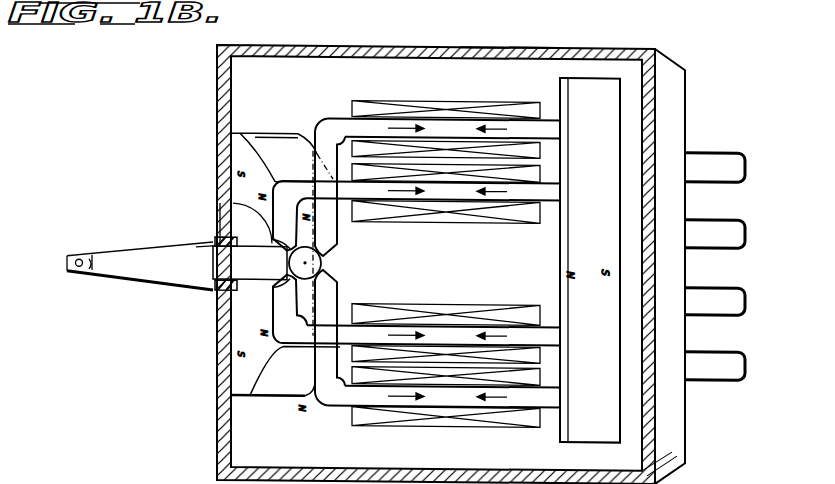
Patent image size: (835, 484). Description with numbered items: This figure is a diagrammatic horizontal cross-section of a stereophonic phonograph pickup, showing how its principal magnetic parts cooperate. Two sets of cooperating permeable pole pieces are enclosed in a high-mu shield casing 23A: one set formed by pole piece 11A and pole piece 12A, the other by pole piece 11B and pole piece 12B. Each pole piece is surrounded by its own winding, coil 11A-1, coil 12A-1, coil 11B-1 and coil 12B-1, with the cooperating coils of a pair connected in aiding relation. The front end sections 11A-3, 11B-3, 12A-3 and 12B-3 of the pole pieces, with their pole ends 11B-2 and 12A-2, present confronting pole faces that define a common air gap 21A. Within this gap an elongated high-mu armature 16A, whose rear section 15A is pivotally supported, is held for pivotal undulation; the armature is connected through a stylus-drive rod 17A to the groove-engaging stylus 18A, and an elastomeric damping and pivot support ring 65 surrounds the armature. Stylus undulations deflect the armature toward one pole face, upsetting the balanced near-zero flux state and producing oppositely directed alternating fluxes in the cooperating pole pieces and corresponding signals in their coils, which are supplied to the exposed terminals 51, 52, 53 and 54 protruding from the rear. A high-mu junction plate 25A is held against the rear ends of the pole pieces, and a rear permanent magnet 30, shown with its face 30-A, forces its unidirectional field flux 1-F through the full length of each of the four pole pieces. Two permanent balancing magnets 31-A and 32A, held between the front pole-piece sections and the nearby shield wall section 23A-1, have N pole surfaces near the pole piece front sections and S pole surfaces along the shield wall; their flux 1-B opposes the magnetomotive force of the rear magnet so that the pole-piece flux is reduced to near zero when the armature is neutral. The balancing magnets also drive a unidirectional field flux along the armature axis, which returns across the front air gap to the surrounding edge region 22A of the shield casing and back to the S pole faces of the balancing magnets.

The pole piece 11A is at (550, 129).
The pole piece 11B is at (550, 193).
The pole piece 12A is at (550, 340).
The pole piece 12B is at (550, 402).
The coil 11A-1 is at (485, 95).
The coil 11B-1 is at (447, 222).
The coil 12A-1 is at (455, 304).
The coil 12B-1 is at (462, 426).
The pole piece front end section 11A-3 is at (328, 226).
The pole piece front end section 11B-3 is at (281, 205).
The pole piece front end section 12A-3 is at (288, 335).
The pole piece front end section 12B-3 is at (332, 300).
The pole piece end 11B-2 is at (263, 253).
The pole piece end 12A-2 is at (262, 278).
The flux 1-B is at (368, 432).
The field flux 1-F is at (545, 445).
The armature rear section 15A is at (278, 240).
The armature 16A is at (215, 266).
The stylus-drive rod 17A is at (125, 282).
The stylus 18A is at (73, 273).
The air gap 21A is at (225, 243).
The shield casing edge region 22A is at (218, 292).
The shield casing 23A is at (519, 38).
The shield wall section 23A-1 is at (228, 166).
The junction plate 25A is at (563, 75).
The permanent magnet 30 is at (606, 244).
The permanent magnet 30-A is at (603, 75).
The balancing magnet 31-A is at (242, 133).
The balancing magnet 32A is at (245, 397).
The damping and pivot support ring 65 is at (205, 247).
The pickup terminal 51 is at (746, 166).
The pickup terminal 52 is at (746, 232).
The terminal 53 is at (746, 302).
The terminal 54 is at (746, 367).